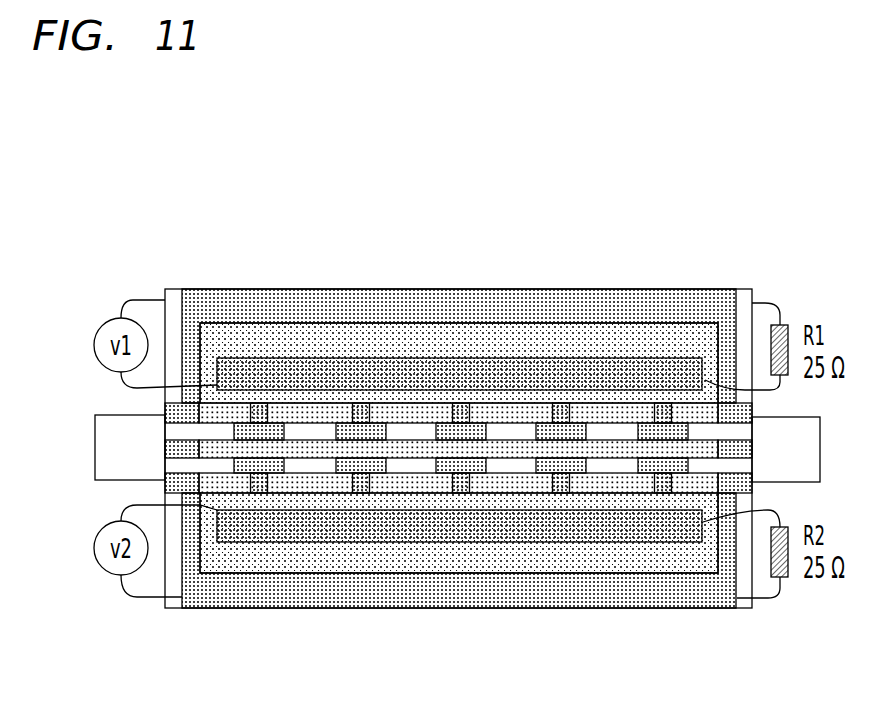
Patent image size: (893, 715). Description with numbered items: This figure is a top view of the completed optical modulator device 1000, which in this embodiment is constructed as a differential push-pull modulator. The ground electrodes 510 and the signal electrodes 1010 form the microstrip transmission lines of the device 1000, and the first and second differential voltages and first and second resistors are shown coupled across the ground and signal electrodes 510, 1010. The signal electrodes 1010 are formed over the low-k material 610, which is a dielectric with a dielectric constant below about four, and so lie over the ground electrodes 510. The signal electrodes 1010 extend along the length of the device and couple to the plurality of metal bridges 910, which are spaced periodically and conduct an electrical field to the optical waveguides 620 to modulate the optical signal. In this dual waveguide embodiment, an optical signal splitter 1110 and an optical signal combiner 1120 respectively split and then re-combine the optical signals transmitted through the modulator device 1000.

The modulator device 1000 is at (233, 187).
The ground electrodes 510 is at (283, 315).
The metal bridges 910 is at (464, 403).
The signal electrodes 1010 is at (518, 375).
The waveguides 620 is at (176, 430).
The optical signal splitter 1110 is at (97, 447).
The optical signal combiner 1120 is at (820, 448).
The low-k material 610 is at (356, 546).